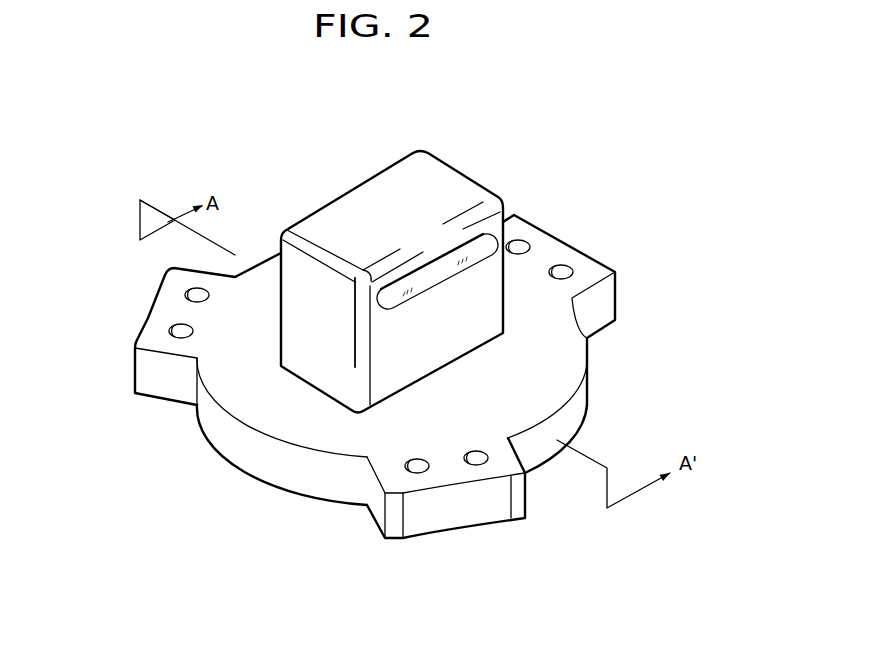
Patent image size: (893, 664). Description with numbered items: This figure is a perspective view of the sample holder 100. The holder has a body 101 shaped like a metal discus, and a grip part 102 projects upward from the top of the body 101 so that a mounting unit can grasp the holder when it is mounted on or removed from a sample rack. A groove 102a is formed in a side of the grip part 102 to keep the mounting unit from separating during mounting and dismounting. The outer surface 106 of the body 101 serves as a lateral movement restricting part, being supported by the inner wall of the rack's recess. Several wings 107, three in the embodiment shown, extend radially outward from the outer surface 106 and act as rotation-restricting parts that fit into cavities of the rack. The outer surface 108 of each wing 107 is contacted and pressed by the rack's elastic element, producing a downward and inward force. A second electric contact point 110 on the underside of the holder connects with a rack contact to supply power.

The sample holder 100 is at (605, 192).
The body 101 is at (555, 362).
The grip part 102 is at (397, 177).
The groove 102a is at (417, 283).
The outer surface 106 is at (265, 460).
The wing 107 is at (150, 337).
The outer surface of the wing 108 is at (155, 318).
The second electric contact point 110 is at (420, 468).